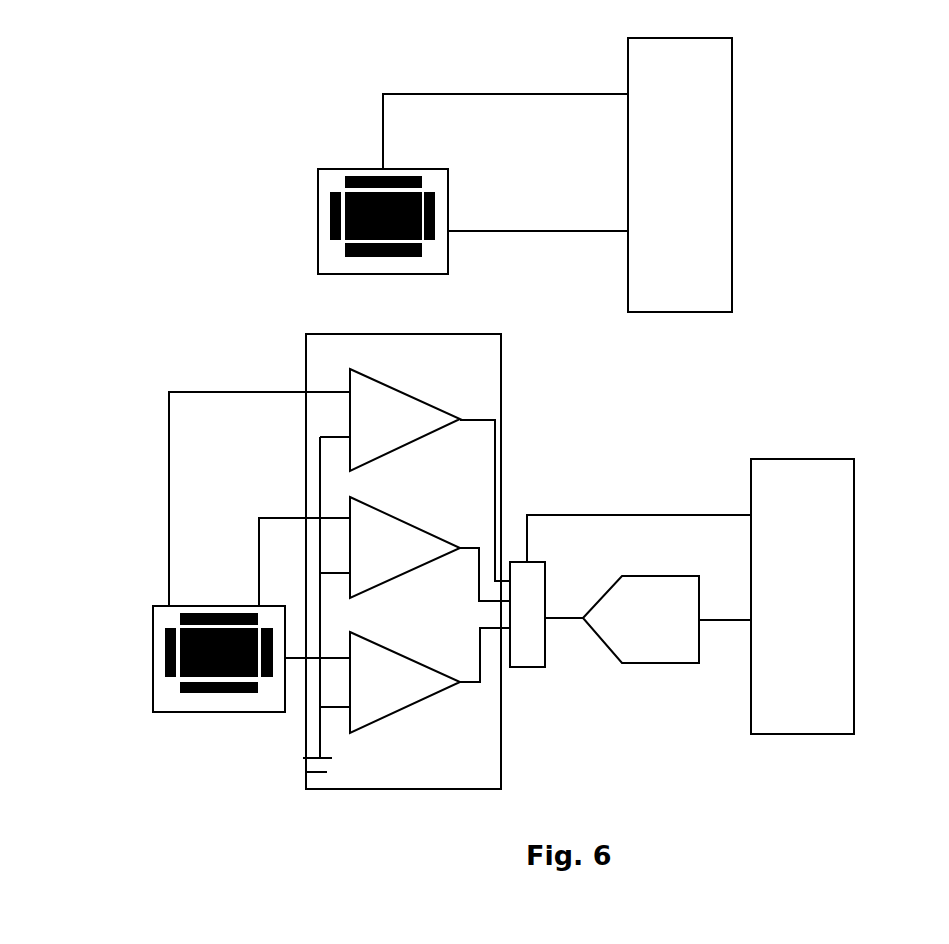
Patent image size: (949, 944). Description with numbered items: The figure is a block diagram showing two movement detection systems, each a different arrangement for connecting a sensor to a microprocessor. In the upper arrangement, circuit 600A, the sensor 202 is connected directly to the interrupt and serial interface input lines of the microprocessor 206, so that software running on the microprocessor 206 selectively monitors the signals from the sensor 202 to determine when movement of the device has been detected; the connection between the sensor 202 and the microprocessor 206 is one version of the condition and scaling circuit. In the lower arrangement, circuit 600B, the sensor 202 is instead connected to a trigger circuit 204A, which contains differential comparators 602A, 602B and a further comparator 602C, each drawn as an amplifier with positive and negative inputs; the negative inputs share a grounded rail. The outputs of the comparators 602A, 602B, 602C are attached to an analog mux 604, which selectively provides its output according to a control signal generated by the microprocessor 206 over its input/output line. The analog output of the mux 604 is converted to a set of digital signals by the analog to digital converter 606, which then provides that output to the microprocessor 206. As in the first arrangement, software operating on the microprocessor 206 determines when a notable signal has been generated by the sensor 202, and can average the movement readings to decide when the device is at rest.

The sensor 202 is at (300, 456).
The microprocessor 206 is at (818, 457).
The circuit 600A is at (635, 162).
The circuit 600B is at (536, 568).
The trigger circuit 204A is at (406, 577).
The differential comparator 602A is at (405, 688).
The differential comparator 602B is at (409, 541).
The amplifier 602C is at (406, 420).
The analog mux 604 is at (535, 629).
The analog to digital converter 606 is at (648, 658).